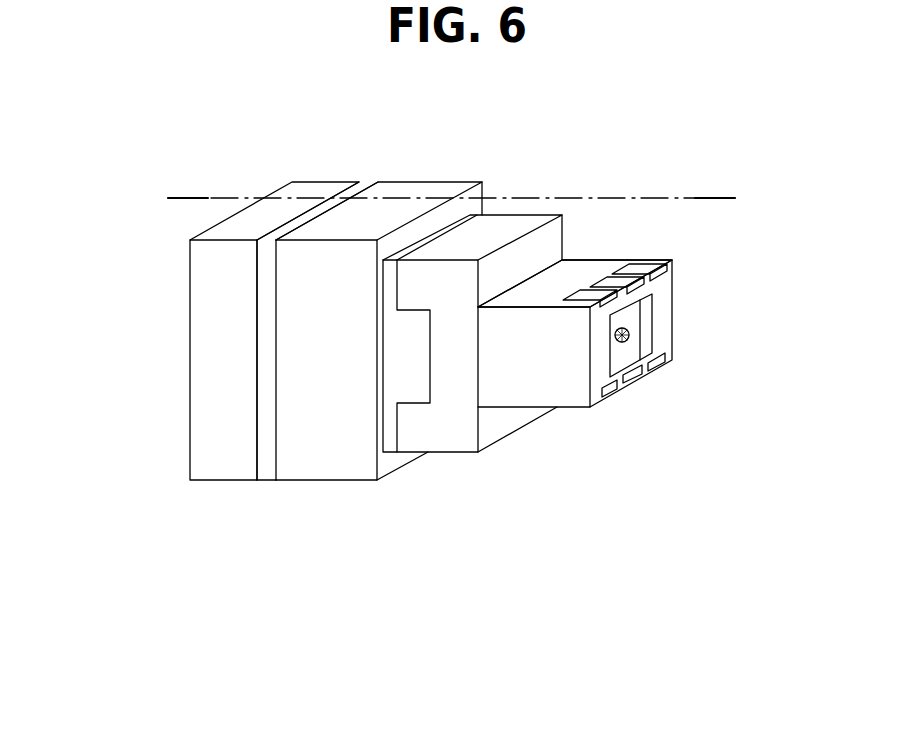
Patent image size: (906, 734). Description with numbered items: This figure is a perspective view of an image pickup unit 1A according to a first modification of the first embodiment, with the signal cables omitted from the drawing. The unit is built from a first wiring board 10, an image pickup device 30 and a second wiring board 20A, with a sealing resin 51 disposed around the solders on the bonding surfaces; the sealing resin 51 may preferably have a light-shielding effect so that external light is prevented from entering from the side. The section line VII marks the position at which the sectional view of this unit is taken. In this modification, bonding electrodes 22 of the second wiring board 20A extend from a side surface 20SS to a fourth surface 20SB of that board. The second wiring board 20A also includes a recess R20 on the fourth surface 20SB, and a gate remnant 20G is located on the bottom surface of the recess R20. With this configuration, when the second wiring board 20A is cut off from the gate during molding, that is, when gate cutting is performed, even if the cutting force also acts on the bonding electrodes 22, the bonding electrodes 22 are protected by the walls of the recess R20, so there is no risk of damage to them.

The image pickup unit 1A is at (105, 181).
The section line VII- VII is at (190, 186).
The image pickup device 30 is at (323, 180).
The sealing resin 51 is at (254, 482).
The first wiring board 10 is at (423, 180).
The second wiring board 20A is at (545, 213).
The side surface 20SS is at (567, 276).
The bonding electrodes 22 is at (642, 260).
The gate remnant 20G is at (640, 337).
The recess R20 is at (658, 320).
The fourth surface 20SB is at (605, 366).